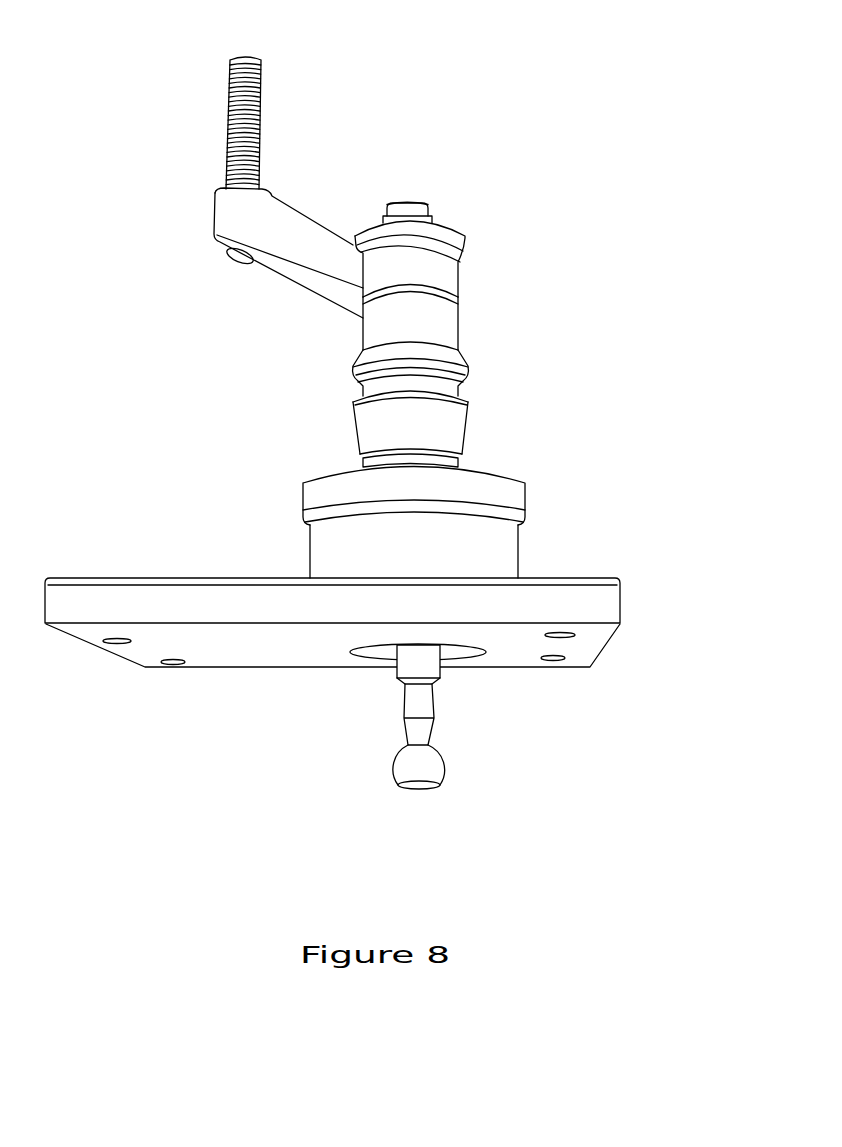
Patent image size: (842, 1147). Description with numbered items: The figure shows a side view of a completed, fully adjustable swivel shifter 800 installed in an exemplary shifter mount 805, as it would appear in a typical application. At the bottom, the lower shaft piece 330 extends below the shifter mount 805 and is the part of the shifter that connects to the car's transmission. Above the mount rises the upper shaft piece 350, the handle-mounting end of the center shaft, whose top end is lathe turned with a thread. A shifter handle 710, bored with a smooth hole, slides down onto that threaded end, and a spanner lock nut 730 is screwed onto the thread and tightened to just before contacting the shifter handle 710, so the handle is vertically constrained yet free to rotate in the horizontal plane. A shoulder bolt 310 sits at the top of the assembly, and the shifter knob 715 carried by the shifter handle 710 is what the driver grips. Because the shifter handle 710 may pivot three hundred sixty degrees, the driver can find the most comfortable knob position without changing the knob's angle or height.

The swivel shifter 800 is at (168, 70).
The shifter knob 715 is at (252, 57).
The shifter handle 710 is at (293, 215).
The shoulder bolt 310 is at (408, 202).
The spanner lock nut 730 is at (466, 244).
The upper shaft piece 350 is at (467, 424).
The shifter mount 805 is at (620, 600).
The lower shaft piece 330 is at (433, 728).